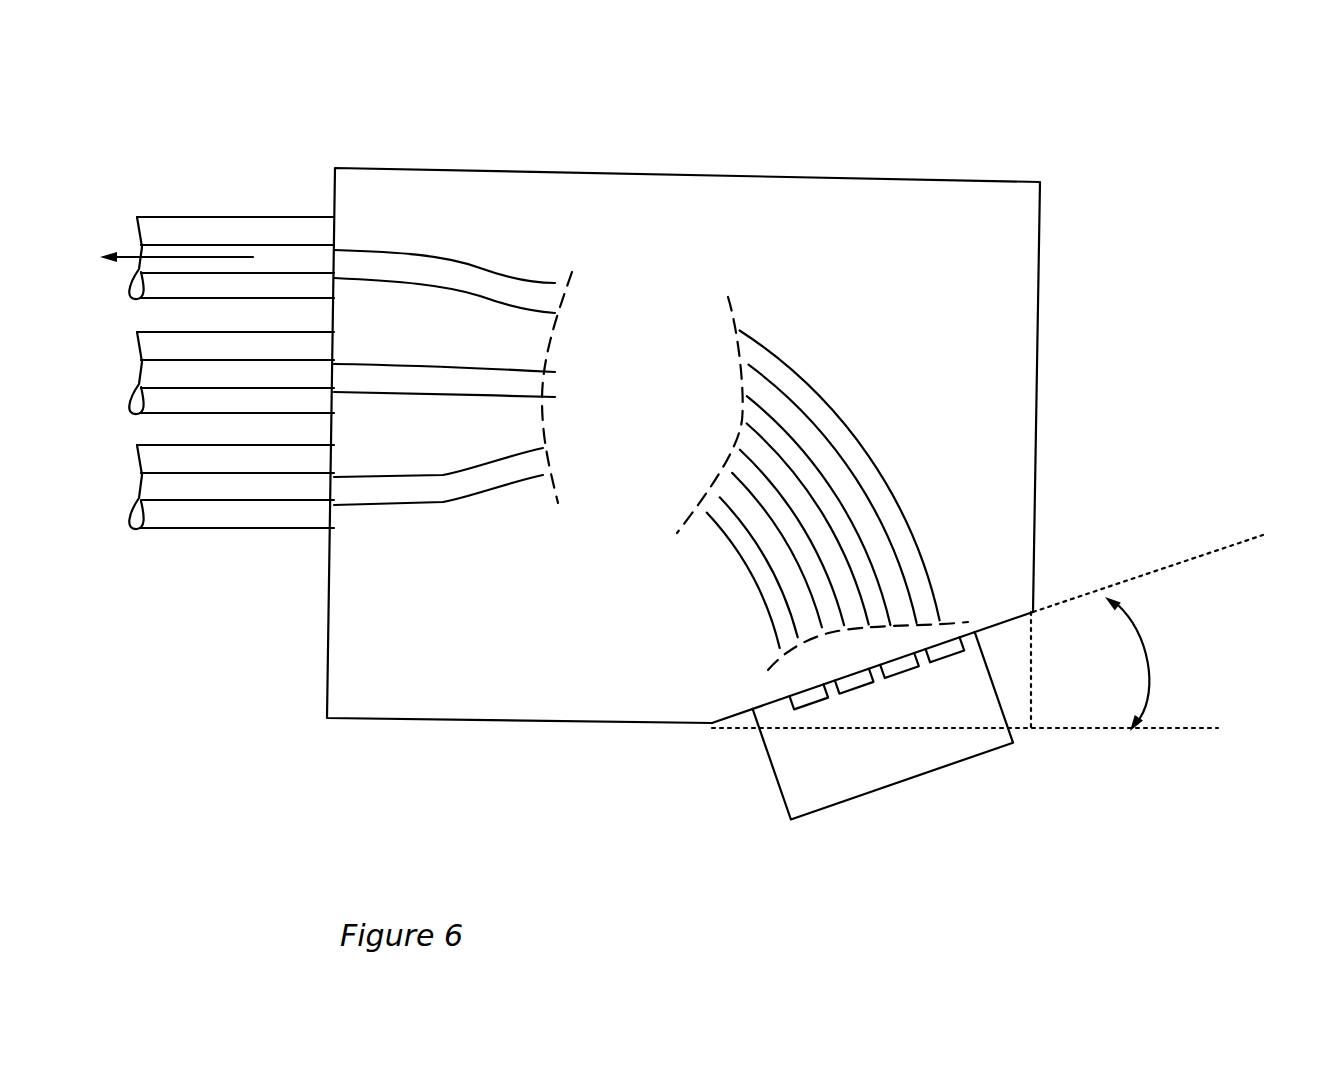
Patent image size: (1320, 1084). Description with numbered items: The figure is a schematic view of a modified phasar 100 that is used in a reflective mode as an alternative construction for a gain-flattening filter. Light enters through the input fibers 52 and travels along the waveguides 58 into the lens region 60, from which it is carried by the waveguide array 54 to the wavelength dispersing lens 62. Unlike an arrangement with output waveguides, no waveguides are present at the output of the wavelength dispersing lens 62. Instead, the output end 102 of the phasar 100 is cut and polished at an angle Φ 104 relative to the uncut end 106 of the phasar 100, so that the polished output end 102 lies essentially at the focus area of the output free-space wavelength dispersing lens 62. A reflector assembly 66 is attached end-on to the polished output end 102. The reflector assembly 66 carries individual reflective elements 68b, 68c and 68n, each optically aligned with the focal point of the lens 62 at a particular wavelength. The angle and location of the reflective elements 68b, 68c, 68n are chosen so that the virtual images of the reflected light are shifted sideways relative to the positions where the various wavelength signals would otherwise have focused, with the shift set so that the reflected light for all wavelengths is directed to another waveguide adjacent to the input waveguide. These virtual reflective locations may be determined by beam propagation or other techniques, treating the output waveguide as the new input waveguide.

The input fibers 52 is at (303, 467).
The waveguide array 54 is at (838, 362).
The waveguides 58 is at (516, 292).
The lens region 60 is at (681, 290).
The wavelength dispersing lens 62 is at (784, 670).
The reflector assembly 66 is at (930, 760).
The reflective element 68n is at (793, 705).
The reflective element 68c is at (858, 716).
The reflective element 68b is at (900, 678).
The modified phasar 100 is at (1233, 257).
The output end 102 is at (872, 680).
The angle Φ 104 is at (1198, 656).
The uncut end 106 is at (682, 741).